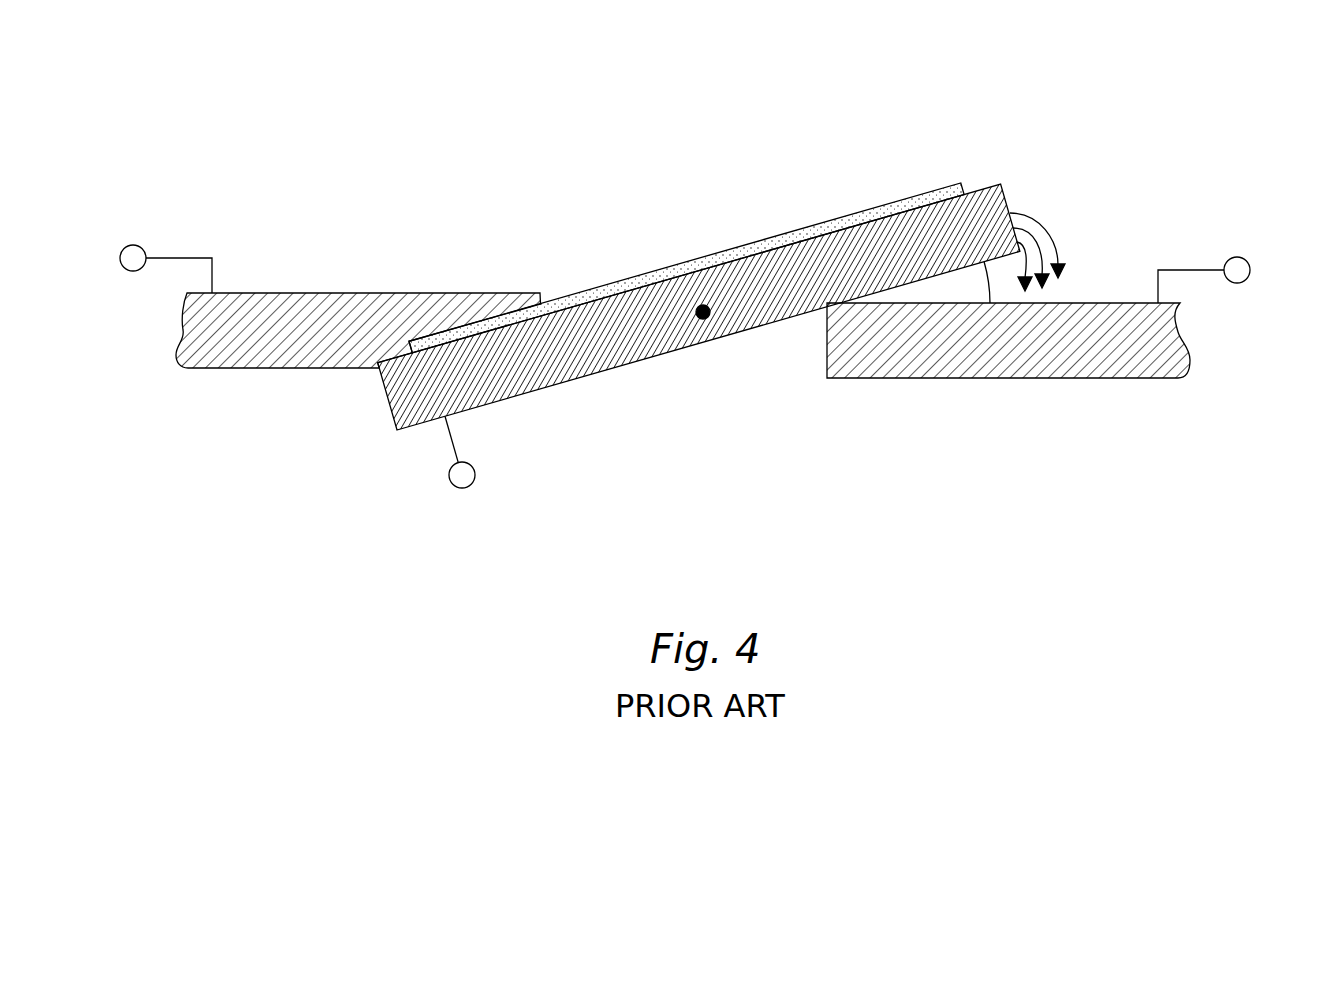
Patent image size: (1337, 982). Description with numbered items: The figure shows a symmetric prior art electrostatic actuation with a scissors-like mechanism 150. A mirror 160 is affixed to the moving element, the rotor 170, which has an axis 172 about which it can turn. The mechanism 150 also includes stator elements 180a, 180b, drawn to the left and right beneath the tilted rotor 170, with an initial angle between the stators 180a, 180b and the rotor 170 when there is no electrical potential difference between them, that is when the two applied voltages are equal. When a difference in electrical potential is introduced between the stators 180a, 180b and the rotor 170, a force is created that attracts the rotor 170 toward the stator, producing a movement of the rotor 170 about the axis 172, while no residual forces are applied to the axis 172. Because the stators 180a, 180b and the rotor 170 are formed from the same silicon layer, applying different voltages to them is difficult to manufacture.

The electrostatic actuation mechanism 150 is at (308, 157).
The mirror 160 is at (625, 287).
The moving element (rotor) 170 is at (912, 248).
The axis 172 is at (703, 312).
The stator element 180a is at (327, 345).
The stator element 180b is at (1005, 353).